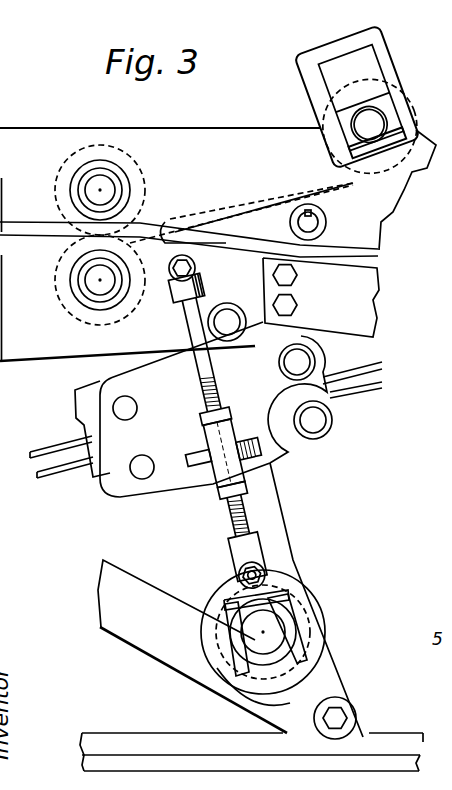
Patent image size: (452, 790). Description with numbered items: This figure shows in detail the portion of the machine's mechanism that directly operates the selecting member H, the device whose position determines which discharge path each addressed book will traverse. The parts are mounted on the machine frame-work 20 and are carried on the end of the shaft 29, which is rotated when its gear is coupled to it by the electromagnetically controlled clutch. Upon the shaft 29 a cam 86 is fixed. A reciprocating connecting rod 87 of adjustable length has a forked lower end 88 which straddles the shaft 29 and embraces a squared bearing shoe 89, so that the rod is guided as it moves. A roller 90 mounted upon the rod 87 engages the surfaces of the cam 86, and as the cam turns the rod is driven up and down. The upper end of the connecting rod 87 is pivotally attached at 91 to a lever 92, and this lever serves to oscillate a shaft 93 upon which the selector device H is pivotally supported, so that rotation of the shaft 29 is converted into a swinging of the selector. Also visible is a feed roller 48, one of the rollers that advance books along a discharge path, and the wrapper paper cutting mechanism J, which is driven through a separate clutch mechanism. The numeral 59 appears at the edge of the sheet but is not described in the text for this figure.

The feed roller 48 is at (408, 118).
The shaft 93 is at (293, 198).
The selector device H is at (165, 221).
The pivot 91 is at (179, 289).
The lever 92 is at (237, 258).
The wrapper paper cutting mechanism J is at (348, 425).
The connecting rod 87 is at (247, 520).
The roller 90 is at (280, 552).
The forked lower end 88 is at (306, 582).
The shaft 29 is at (268, 630).
The cam 86 is at (316, 640).
The frame-work 20 is at (326, 681).
The squared bearing shoe 89 is at (192, 646).
The element 59 is at (441, 669).